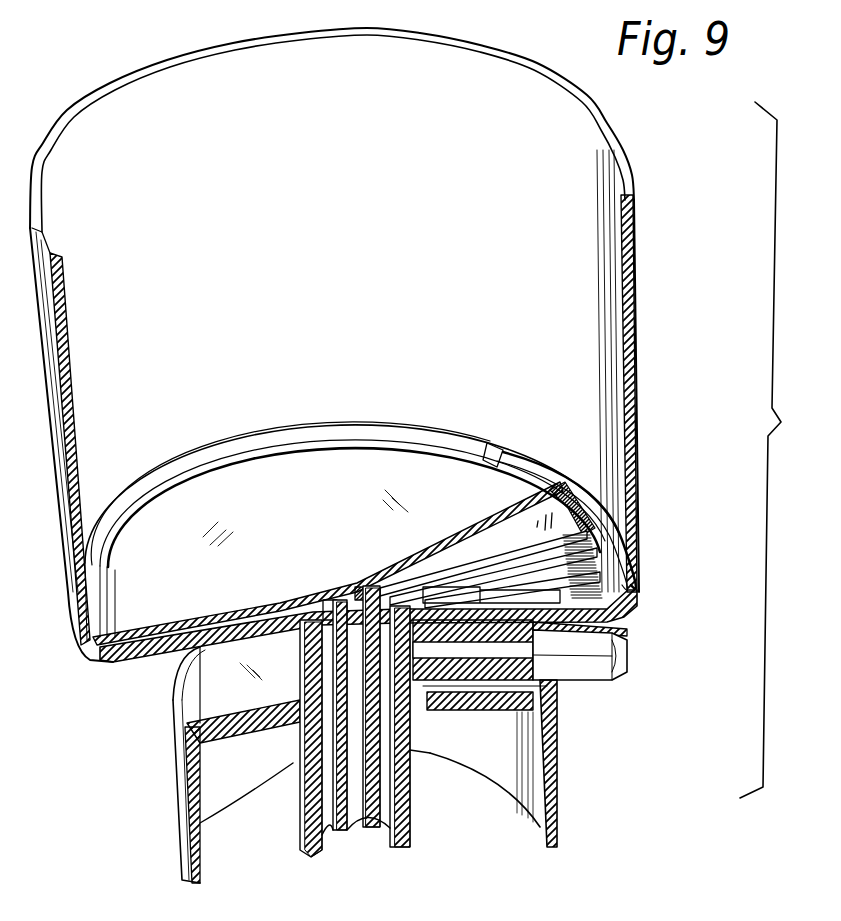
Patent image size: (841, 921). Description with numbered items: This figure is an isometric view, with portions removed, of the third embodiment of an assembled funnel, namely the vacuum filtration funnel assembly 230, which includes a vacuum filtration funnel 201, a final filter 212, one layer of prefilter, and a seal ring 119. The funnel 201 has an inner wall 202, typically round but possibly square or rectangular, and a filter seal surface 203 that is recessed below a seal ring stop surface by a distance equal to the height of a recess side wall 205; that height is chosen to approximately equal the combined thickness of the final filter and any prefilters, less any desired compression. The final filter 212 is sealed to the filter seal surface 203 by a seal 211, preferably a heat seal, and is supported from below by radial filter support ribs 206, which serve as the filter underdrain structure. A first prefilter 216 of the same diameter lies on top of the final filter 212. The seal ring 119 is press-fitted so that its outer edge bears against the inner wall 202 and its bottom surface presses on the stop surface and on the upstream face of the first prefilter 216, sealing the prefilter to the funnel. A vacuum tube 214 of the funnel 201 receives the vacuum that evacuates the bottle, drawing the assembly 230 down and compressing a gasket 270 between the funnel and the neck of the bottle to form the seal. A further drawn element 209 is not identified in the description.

The seal ring 119 is at (303, 447).
The vacuum filtration funnel 201 is at (645, 268).
The inner wall 202 is at (464, 62).
The filter seal surface 203 is at (612, 578).
The recess side wall 205 is at (583, 490).
The radial filter support ribs 206 is at (437, 587).
The pedestal 209 is at (343, 832).
The seal 211 is at (593, 530).
The final filter 212 is at (545, 527).
The vacuum tube 214 is at (627, 660).
The first prefilter 216 is at (443, 483).
The vacuum filtration funnel assembly 230 is at (782, 450).
The gasket 270 is at (540, 716).